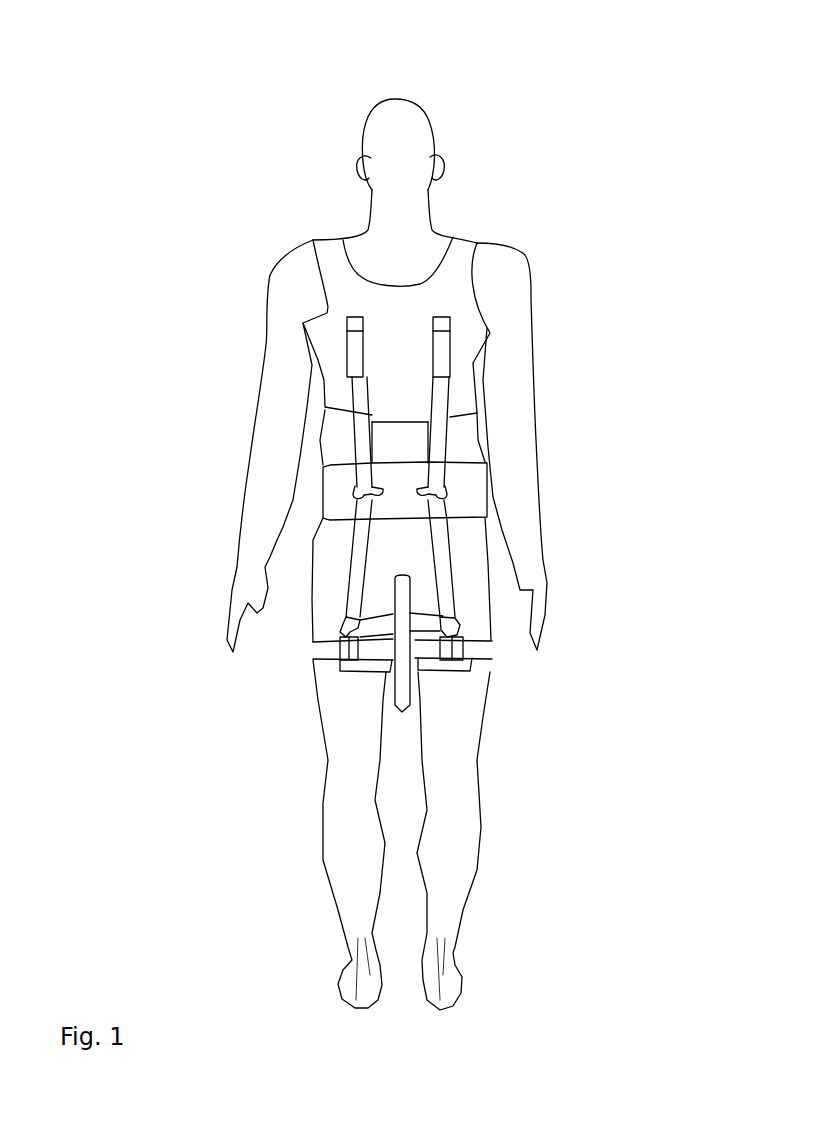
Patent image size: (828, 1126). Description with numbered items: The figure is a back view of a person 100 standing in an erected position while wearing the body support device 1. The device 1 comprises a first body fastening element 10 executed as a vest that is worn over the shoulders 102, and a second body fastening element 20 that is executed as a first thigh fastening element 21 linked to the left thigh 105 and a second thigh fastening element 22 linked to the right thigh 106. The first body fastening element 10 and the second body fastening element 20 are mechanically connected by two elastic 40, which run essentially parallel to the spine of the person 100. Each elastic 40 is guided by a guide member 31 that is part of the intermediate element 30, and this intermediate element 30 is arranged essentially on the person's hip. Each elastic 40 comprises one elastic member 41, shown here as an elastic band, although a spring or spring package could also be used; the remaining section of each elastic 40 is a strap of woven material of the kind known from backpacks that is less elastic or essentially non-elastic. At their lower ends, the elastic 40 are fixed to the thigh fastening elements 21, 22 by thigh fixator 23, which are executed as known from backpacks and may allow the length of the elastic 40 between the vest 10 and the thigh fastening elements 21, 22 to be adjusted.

The body support device 1 is at (612, 317).
The person 100 is at (324, 148).
The shoulders 102 is at (297, 260).
The left thigh 105 is at (355, 715).
The right thigh 106 is at (463, 715).
The first body fastening element 10 is at (440, 287).
The elastic member 41 is at (442, 348).
The elastic 40 is at (435, 443).
The guide member 31 is at (428, 488).
The intermediate element 30 is at (463, 480).
The second body fastening element 20 is at (506, 691).
The first thigh fastening element 21 is at (377, 627).
The second thigh fastening element 22 is at (465, 632).
The thigh fixator 23 is at (447, 633).